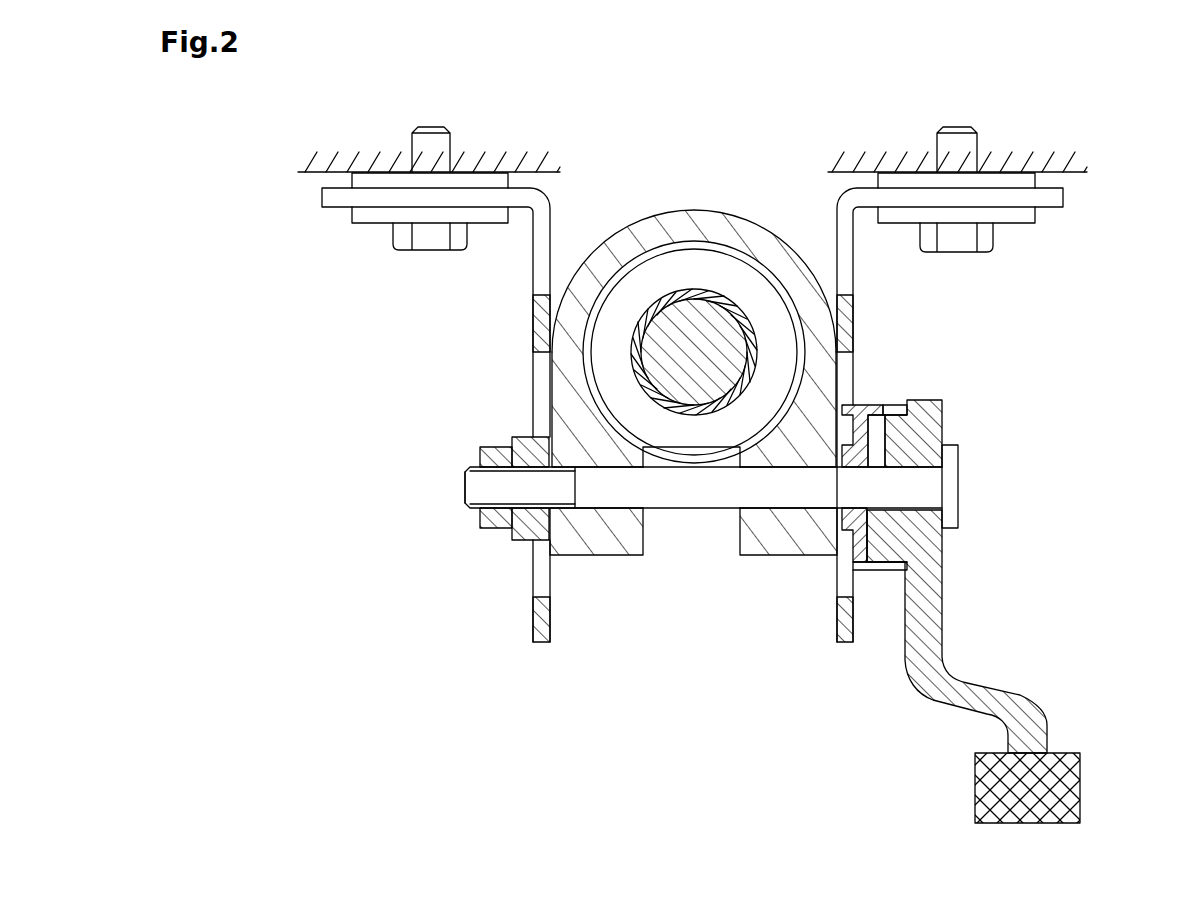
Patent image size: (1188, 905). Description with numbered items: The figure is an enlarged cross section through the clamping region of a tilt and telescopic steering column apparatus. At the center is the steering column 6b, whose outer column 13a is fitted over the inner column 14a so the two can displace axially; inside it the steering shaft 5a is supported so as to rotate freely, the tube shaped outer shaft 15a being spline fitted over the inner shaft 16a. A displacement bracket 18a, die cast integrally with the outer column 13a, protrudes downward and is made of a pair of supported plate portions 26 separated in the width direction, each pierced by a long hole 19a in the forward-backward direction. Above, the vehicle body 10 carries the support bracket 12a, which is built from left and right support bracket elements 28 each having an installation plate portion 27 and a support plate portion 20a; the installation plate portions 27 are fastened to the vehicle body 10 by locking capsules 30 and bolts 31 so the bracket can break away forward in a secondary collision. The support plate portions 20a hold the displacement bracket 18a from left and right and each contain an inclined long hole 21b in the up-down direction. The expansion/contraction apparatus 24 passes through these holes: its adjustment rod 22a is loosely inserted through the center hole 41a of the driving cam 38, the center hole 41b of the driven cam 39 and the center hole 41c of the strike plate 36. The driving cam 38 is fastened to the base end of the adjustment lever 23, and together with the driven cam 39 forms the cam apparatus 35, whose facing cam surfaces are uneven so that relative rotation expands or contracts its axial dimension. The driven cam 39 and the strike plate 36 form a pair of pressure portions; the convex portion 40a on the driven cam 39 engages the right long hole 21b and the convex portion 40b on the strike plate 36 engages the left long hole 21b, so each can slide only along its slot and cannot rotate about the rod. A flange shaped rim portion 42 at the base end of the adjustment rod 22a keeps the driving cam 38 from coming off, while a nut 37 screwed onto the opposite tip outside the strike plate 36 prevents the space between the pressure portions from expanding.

The vehicle body 10 is at (1078, 164).
The locking capsule 30 is at (486, 186).
The installation plate portion 27 is at (340, 199).
The bolt 31 is at (433, 242).
The support bracket element 28 is at (692, 450).
The support bracket 12a is at (862, 268).
The support plate portion 20a is at (534, 312).
The long hole in the up-down direction 21b is at (539, 642).
The steering column 6b is at (693, 418).
The outer column 13a is at (641, 238).
The inner column 14a is at (604, 283).
The outer shaft 15a is at (753, 343).
The inner shaft 16a is at (681, 337).
The steering shaft 5a is at (694, 367).
The displacement bracket 18a is at (693, 552).
The supported plate portion 26 is at (620, 541).
The long hole in the forward-backward direction 19a is at (625, 510).
The strike plate 36 is at (523, 448).
The center hole of the strike plate 41c is at (523, 510).
The nut 37 is at (500, 529).
The convex portion of the strike plate 40b is at (549, 543).
The expansion/contraction apparatus 24 is at (920, 405).
The center hole of the driven cam 41b is at (848, 468).
The cam apparatus 35 is at (936, 427).
The rim portion 42 is at (745, 528).
The adjustment rod 22a is at (722, 492).
The center hole of the driving cam 41a is at (946, 470).
The adjustment lever 23 is at (917, 665).
The driving cam 38 is at (884, 546).
The convex portion of the driven cam 40a is at (857, 522).
The driven cam 39 is at (866, 546).